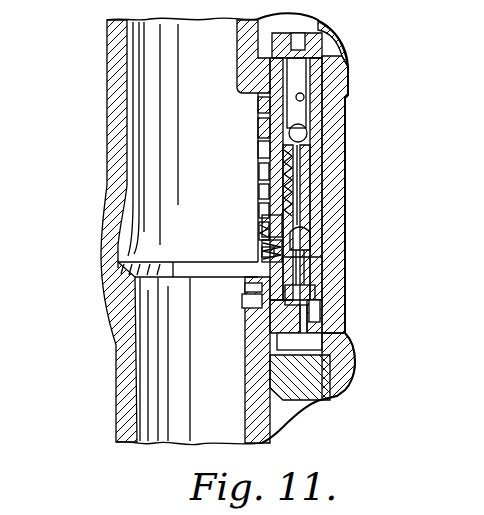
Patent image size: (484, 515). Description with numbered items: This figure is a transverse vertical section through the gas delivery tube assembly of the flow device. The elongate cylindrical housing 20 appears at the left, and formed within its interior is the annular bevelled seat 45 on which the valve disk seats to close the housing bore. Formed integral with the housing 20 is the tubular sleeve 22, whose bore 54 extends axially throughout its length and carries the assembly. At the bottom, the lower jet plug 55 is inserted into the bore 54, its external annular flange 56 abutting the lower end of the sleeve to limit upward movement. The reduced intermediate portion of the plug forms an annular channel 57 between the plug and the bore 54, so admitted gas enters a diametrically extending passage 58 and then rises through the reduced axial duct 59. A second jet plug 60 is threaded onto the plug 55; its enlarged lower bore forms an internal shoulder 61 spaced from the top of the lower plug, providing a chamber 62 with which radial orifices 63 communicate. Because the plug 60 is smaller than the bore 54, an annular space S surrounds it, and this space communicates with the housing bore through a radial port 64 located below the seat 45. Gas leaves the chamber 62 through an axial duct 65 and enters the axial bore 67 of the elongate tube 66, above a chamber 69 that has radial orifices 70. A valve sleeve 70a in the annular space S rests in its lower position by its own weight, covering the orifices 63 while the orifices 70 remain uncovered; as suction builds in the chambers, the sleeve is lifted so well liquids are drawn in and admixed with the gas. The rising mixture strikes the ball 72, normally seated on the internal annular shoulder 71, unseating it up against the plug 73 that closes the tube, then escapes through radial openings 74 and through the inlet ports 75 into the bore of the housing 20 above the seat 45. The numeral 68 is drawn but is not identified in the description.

The housing 20 is at (107, 134).
The annular bevelled seat 45 is at (138, 258).
The tubular sleeve 22 is at (350, 113).
The bore 54 is at (331, 163).
The plug 73 is at (298, 46).
The radial openings 74 is at (318, 97).
The second jet plug 60 is at (331, 270).
The chamber 62 is at (331, 284).
The annular space S is at (331, 215).
The radial orifices 70 is at (331, 226).
The axial duct 65 is at (331, 252).
The valve sleeve 70a is at (331, 257).
The inlet ports 75 is at (259, 104).
The ball 72 is at (260, 130).
The internal annular shoulder 71 is at (260, 150).
The elongate tube 66 is at (260, 172).
The axial bore 67 is at (260, 192).
The seal ring 68 is at (260, 212).
The chamber 69 is at (260, 232).
The internal shoulder 61 is at (262, 254).
The reduced axial duct 59 is at (331, 320).
The annular channel 57 is at (331, 336).
The lower jet plug 55 is at (353, 357).
The external annular flange 56 is at (337, 388).
The diametrically extending passage 58 is at (250, 347).
The radial orifices 63 is at (246, 290).
The radial port 64 is at (246, 305).